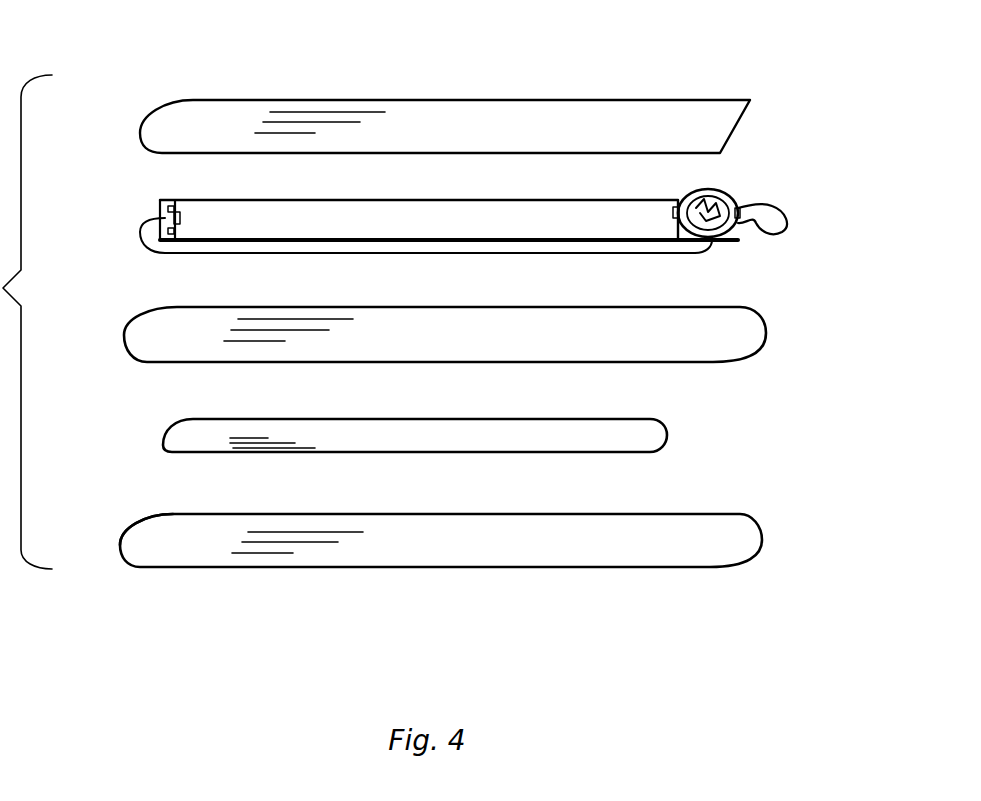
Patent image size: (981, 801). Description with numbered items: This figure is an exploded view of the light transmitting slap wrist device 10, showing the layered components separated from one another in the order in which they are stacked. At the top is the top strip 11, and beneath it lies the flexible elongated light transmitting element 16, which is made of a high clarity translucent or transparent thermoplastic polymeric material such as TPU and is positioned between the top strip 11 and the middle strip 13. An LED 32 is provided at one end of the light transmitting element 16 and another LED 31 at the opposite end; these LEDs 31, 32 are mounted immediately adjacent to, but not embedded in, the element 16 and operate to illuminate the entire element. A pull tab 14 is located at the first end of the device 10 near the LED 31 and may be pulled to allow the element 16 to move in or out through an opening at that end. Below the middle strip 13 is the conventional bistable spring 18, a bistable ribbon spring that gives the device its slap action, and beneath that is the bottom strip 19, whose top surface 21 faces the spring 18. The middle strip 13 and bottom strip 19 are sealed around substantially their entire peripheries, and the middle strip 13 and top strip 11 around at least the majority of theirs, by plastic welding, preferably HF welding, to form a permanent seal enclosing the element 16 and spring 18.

The light transmitting slap wrist device 10 is at (788, 80).
The top strip 11 is at (548, 127).
The flexible elongated light transmitting element 16 is at (530, 223).
The LED 32 is at (160, 203).
The LED 31 is at (683, 193).
The pull tab 14 is at (774, 216).
The middle strip 13 is at (672, 345).
The bistable spring 18 is at (611, 443).
The bottom strip 19 is at (612, 567).
The top surface 21 is at (172, 535).